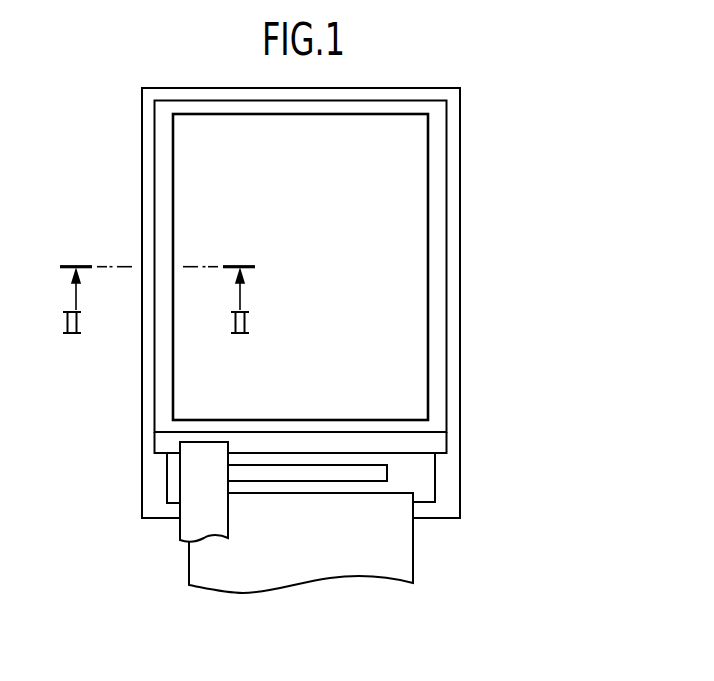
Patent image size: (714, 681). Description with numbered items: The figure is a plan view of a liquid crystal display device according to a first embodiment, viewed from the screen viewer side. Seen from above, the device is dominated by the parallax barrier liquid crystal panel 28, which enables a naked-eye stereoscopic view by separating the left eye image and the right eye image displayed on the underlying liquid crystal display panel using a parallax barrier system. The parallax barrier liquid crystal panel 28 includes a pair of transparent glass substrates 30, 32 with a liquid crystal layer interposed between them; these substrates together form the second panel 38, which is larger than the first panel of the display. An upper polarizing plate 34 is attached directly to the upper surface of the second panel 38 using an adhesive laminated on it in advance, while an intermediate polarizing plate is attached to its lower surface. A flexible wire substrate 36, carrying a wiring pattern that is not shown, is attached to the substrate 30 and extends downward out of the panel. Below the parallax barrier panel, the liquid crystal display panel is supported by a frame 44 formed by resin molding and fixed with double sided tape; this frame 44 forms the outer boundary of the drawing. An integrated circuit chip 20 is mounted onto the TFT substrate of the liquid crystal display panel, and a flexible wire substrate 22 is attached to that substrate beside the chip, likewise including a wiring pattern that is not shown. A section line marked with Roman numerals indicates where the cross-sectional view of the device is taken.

The integrated circuit chip 20 is at (330, 472).
The flexible wire substrate 22 is at (397, 553).
The parallax barrier liquid crystal panel 28 is at (369, 375).
The substrate 30 is at (438, 443).
The substrate 32 is at (438, 426).
The upper polarizing plate 34 is at (408, 176).
The flexible wire substrate 36 is at (208, 524).
The second panel 38 is at (375, 279).
The frame 44 is at (461, 255).